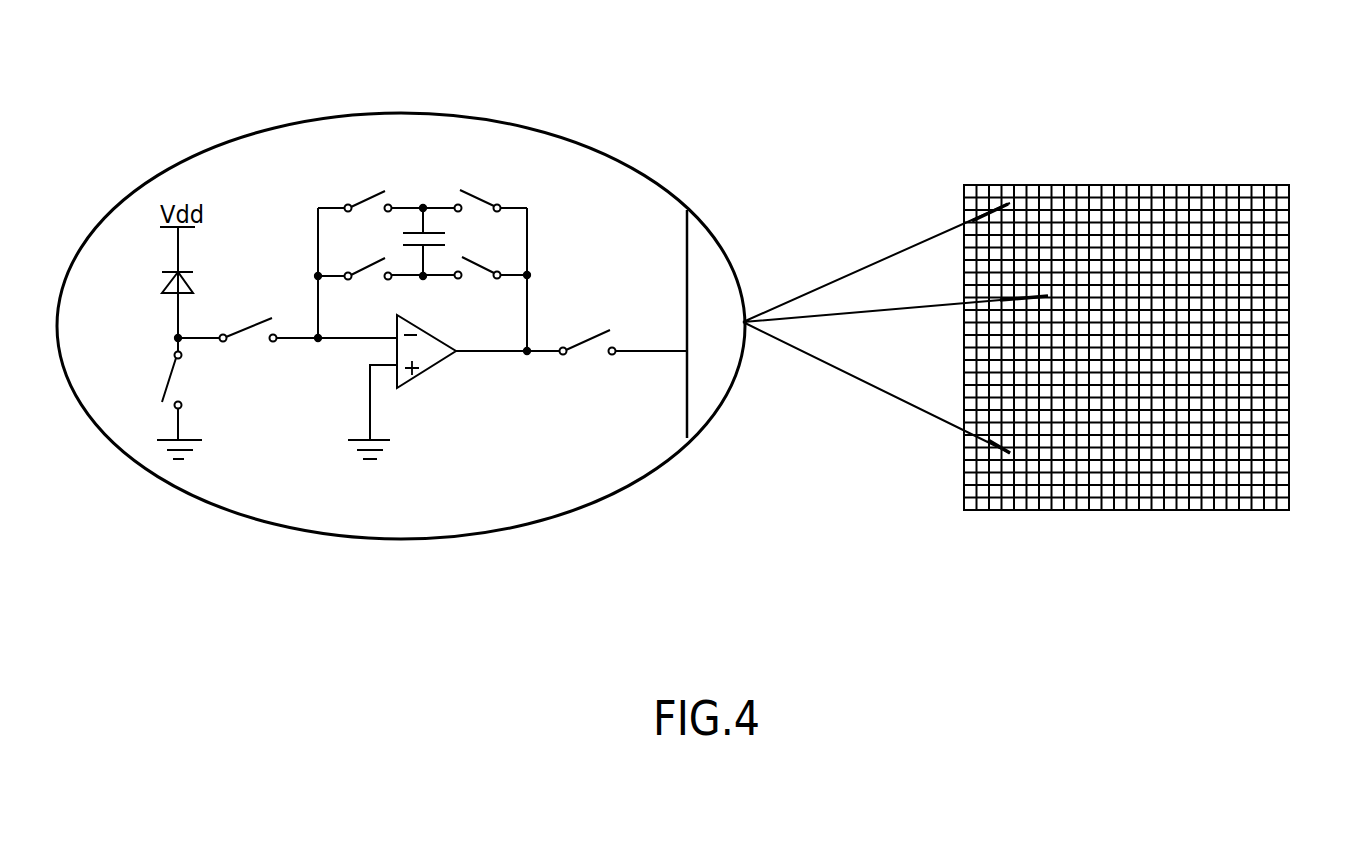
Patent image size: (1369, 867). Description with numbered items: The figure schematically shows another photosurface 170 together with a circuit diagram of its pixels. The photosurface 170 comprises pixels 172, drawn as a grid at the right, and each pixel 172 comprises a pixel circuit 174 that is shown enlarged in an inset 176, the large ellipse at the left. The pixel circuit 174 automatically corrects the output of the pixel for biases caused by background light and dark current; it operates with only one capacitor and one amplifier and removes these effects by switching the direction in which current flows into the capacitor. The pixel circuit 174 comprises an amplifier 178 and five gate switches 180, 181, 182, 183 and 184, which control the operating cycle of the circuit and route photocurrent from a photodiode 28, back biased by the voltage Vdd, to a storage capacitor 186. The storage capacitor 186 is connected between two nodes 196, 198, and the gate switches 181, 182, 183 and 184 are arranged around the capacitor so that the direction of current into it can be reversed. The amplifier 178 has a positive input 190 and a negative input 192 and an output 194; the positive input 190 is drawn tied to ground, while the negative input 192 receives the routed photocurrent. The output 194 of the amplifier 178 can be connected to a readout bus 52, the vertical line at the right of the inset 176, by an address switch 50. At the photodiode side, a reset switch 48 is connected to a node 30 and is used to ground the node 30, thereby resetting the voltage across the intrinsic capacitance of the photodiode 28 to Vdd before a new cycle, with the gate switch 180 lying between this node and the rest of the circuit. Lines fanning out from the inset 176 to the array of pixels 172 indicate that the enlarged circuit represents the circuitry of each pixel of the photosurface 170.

The photodiode 28 is at (168, 282).
The node 30 is at (187, 340).
The reset switch 48 is at (170, 377).
The address switch 50 is at (588, 348).
The readout bus 52 is at (683, 277).
The photosurface 170 is at (1222, 138).
The pixels 172 is at (1062, 232).
The pixel circuit 174 is at (416, 163).
The inset 176 is at (623, 150).
The amplifier 178 is at (430, 352).
The gate switch 180 is at (242, 320).
The gate switch 181 is at (465, 258).
The gate switch 182 is at (483, 193).
The gate switch 183 is at (370, 197).
The gate switch 184 is at (363, 267).
The storage capacitor 186 is at (436, 244).
The positive input 190 is at (388, 372).
The negative input 192 is at (396, 341).
The output 194 is at (457, 353).
The node 196 is at (423, 282).
The node 198 is at (423, 200).